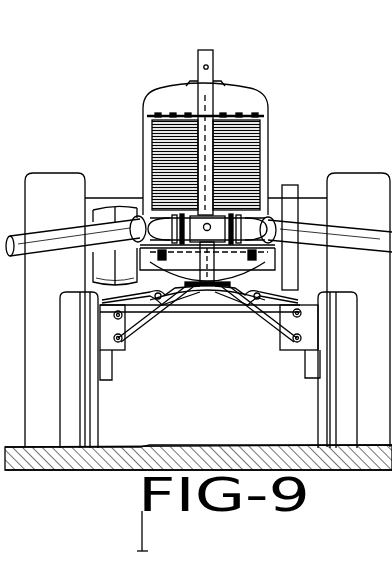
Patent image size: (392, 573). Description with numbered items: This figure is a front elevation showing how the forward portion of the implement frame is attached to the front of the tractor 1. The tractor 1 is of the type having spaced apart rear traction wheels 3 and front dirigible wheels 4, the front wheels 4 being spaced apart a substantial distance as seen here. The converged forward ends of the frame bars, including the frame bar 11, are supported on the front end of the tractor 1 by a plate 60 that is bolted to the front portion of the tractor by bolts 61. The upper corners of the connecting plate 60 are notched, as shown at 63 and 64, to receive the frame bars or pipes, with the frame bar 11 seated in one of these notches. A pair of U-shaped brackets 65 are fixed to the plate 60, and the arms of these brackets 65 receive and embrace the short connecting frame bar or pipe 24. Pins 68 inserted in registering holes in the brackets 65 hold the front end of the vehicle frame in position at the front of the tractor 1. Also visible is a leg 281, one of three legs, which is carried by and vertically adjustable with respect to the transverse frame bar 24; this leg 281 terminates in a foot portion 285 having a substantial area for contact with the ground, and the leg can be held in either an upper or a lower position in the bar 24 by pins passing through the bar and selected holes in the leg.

The tractor 1 is at (252, 60).
The leg 281 is at (206, 52).
The rear traction wheels 3 is at (43, 186).
The front dirigible wheels 4 is at (70, 440).
The frame bar 11 is at (372, 240).
The connecting frame bar 24 is at (262, 272).
The plate 60 is at (200, 290).
The bolts 61 is at (172, 300).
The notch 63 is at (140, 215).
The notch 64 is at (296, 194).
The U-shaped brackets 65 is at (190, 214).
The pins 68 is at (178, 214).
The foot portion 285 is at (210, 288).